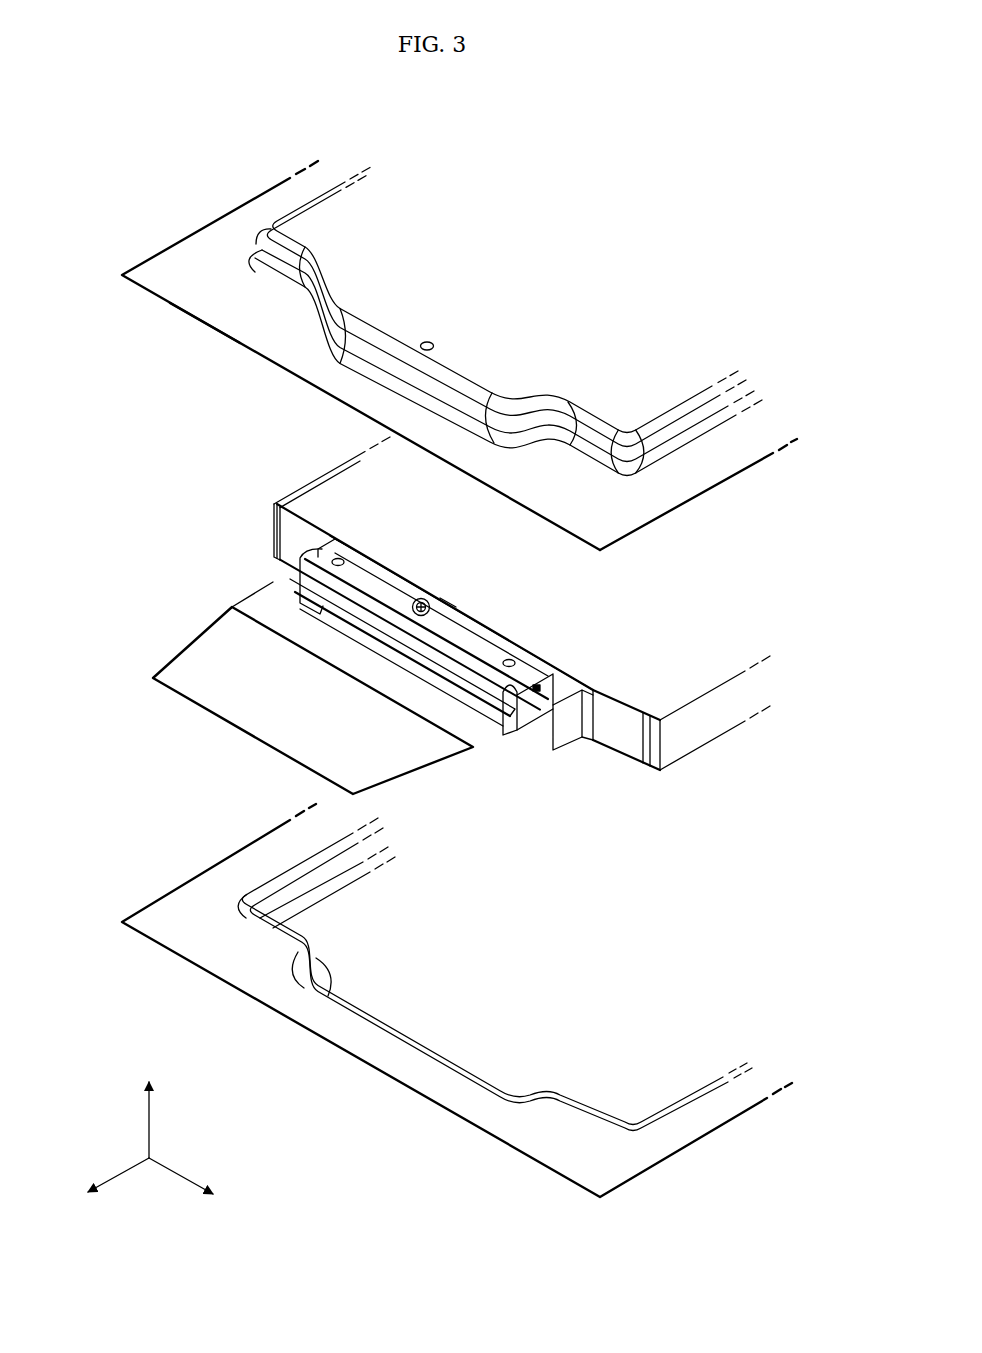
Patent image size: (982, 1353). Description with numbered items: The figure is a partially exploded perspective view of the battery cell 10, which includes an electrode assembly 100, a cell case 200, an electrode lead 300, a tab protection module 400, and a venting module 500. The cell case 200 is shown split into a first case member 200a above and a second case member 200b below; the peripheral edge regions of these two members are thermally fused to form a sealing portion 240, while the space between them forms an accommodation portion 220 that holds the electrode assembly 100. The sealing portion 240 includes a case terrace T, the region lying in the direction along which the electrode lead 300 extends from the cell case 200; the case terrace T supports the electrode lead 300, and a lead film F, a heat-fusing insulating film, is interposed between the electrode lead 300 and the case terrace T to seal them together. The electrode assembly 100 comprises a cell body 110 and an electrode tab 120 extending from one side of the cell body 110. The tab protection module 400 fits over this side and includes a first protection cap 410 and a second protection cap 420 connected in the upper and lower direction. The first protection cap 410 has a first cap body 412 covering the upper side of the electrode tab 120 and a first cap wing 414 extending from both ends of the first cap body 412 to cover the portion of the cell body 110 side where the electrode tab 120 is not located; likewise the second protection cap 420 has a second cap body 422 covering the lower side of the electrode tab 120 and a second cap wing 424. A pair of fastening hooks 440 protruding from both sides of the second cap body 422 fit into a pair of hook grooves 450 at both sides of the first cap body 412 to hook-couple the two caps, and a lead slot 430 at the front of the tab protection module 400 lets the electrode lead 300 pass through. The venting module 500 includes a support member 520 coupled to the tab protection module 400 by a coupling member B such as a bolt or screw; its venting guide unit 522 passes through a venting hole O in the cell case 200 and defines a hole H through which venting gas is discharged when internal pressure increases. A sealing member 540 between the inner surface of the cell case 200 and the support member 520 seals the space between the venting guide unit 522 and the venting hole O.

The battery cell 10 is at (214, 162).
The cell case 200 is at (146, 307).
The first case member 200a is at (700, 395).
The second case member 200b is at (713, 1113).
The sealing portion 240 is at (713, 468).
The case terrace T is at (212, 322).
The venting hole O is at (430, 341).
The electrode assembly 100 is at (318, 446).
The cell body 110 is at (305, 490).
The electrode tab 120 is at (513, 640).
The first cap wing 414 is at (290, 540).
The coupling member B is at (333, 543).
The first cap body 412 is at (360, 592).
The first protection cap 410 is at (411, 574).
The venting guide unit 522 is at (447, 600).
The hole H is at (426, 599).
The lead slot 430 is at (298, 580).
The support member 520 is at (455, 632).
The venting module 500 is at (402, 626).
The sealing member 540 is at (432, 652).
The hook groove 450 is at (540, 685).
The fastening hook 440 is at (557, 694).
The second cap body 422 is at (507, 735).
The second protection cap 420 is at (517, 750).
The second cap wing 424 is at (565, 735).
The tab protection module 400 is at (561, 794).
The electrode lead 300 is at (180, 682).
The lead film F is at (234, 604).
The accommodation portion 220 is at (639, 1063).